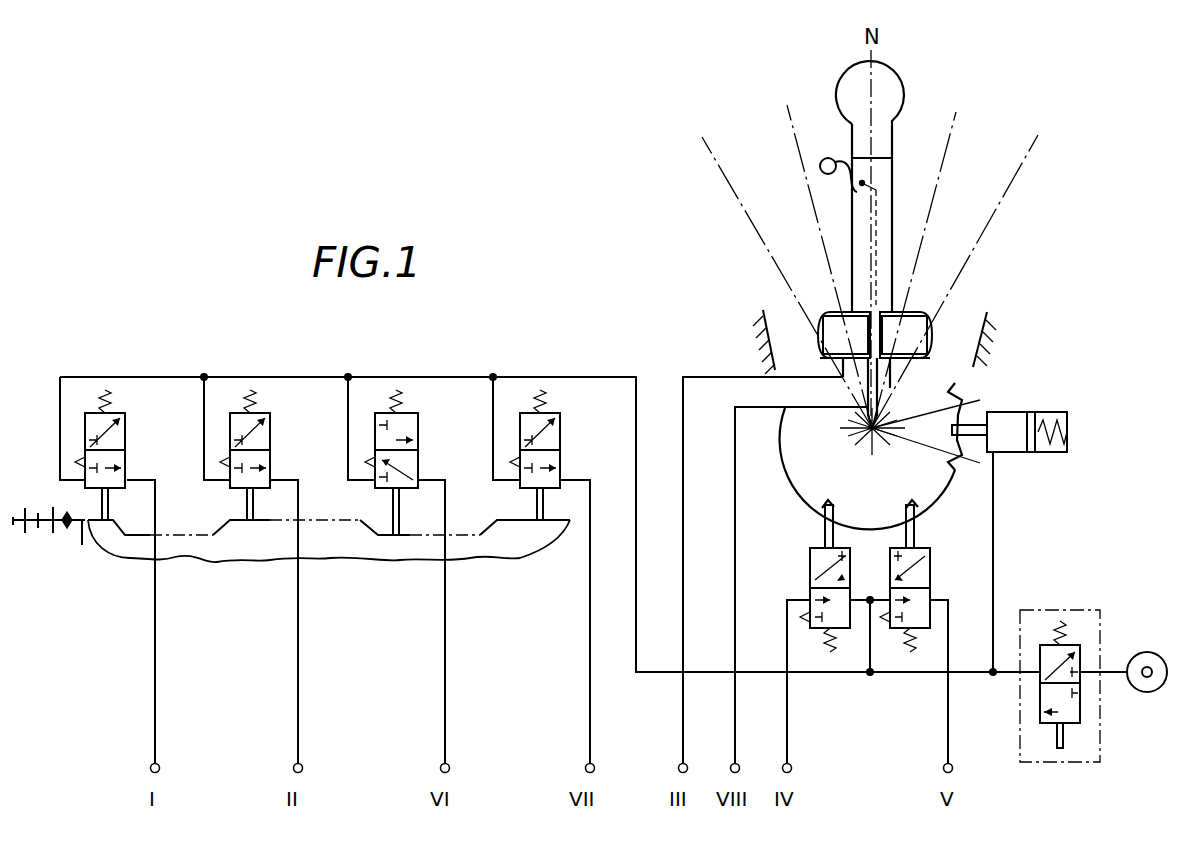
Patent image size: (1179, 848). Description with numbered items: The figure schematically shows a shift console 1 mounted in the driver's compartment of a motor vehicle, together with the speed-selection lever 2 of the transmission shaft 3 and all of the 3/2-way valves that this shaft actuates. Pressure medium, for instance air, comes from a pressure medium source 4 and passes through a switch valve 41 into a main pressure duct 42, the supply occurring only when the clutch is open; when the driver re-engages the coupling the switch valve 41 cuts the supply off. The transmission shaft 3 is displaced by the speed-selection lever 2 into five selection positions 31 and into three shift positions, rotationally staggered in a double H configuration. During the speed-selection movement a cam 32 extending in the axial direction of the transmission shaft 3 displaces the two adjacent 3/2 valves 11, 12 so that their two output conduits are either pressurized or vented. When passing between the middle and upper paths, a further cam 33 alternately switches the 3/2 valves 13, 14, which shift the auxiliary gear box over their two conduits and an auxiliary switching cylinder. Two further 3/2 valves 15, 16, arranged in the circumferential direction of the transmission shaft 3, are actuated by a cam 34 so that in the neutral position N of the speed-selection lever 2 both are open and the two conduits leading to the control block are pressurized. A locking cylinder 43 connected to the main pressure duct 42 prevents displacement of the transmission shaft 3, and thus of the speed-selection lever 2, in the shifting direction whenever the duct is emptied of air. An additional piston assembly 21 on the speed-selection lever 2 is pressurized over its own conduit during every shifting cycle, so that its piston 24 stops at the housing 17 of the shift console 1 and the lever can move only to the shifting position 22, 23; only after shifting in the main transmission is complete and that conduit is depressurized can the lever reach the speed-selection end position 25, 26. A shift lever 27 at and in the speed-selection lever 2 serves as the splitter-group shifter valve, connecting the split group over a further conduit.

The shift console 1 is at (1038, 243).
The speed-selection lever 2 is at (883, 182).
The transmission shaft 3 is at (784, 412).
The pressure medium source 4 is at (1143, 660).
The 3/2 valve 11 is at (117, 424).
The 3/2 valve 12 is at (258, 423).
The 3/2 valve 13 is at (405, 425).
The 3/2 valve 14 is at (548, 424).
The 3/2 valve 15 is at (820, 572).
The 3/2 valve 16 is at (920, 575).
The housing 17 is at (983, 337).
The additional piston assembly 21 is at (932, 292).
The shifting position 22 is at (787, 118).
The shifting position 23 is at (947, 173).
The piston 24 is at (832, 332).
The speed-selection end position 25 is at (712, 152).
The speed-selection end position 26 is at (1022, 175).
The shift lever 27 is at (829, 158).
The selection positions 31 is at (62, 528).
The cam 32 is at (127, 540).
The further cam 33 is at (405, 540).
The cam 34 is at (855, 505).
The switch valve 41 is at (1047, 652).
The main pressure duct 42 is at (970, 677).
The locking cylinder 43 is at (1047, 413).